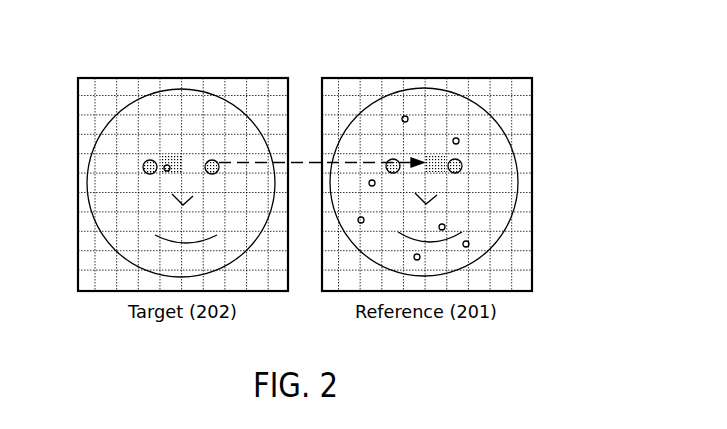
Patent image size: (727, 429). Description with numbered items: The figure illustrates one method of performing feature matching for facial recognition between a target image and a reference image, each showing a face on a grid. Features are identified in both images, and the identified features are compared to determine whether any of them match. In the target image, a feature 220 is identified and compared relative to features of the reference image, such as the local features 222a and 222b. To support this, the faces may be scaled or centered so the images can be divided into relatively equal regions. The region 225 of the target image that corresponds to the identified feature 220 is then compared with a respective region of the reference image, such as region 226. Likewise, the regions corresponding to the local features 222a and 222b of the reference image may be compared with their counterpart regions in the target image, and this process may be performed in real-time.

The feature 220 is at (168, 164).
The region 225 is at (159, 155).
The feature 222a is at (406, 116).
The feature 222b is at (459, 142).
The region 226 is at (435, 153).